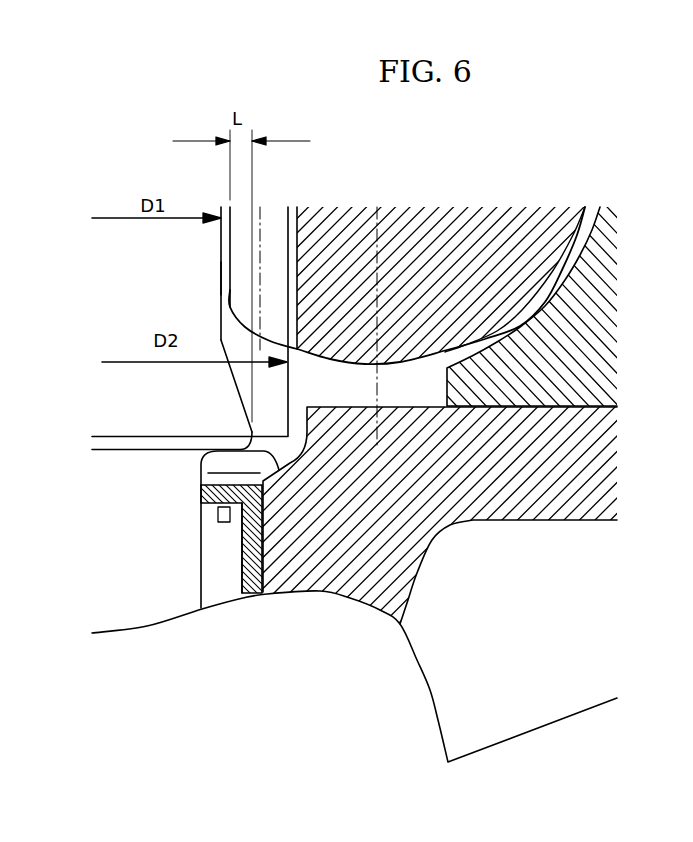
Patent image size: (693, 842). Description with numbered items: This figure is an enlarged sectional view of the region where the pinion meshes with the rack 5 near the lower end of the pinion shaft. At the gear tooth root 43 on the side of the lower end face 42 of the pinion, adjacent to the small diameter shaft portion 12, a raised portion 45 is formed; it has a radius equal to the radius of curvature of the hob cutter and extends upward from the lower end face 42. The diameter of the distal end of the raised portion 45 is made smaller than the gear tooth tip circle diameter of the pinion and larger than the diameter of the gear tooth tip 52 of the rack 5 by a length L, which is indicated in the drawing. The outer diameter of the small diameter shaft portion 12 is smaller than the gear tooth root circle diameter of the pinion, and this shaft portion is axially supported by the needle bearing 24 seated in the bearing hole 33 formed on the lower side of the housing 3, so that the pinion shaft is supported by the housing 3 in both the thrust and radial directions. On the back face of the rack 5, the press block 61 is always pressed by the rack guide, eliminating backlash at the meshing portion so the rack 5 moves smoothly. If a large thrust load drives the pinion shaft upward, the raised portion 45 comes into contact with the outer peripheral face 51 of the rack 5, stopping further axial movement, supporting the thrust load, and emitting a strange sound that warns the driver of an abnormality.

The housing 3 is at (563, 503).
The rack 5 is at (520, 222).
The small diameter shaft portion 12 is at (142, 614).
The needle bearing 24 is at (220, 596).
The bearing hole 33 is at (248, 596).
The lower end face 42 is at (113, 458).
The gear tooth root 43 is at (221, 258).
The raised portion 45 is at (238, 386).
The outer peripheral face 51 is at (370, 364).
The gear tooth tip 52 is at (222, 281).
The press block 61 is at (593, 370).